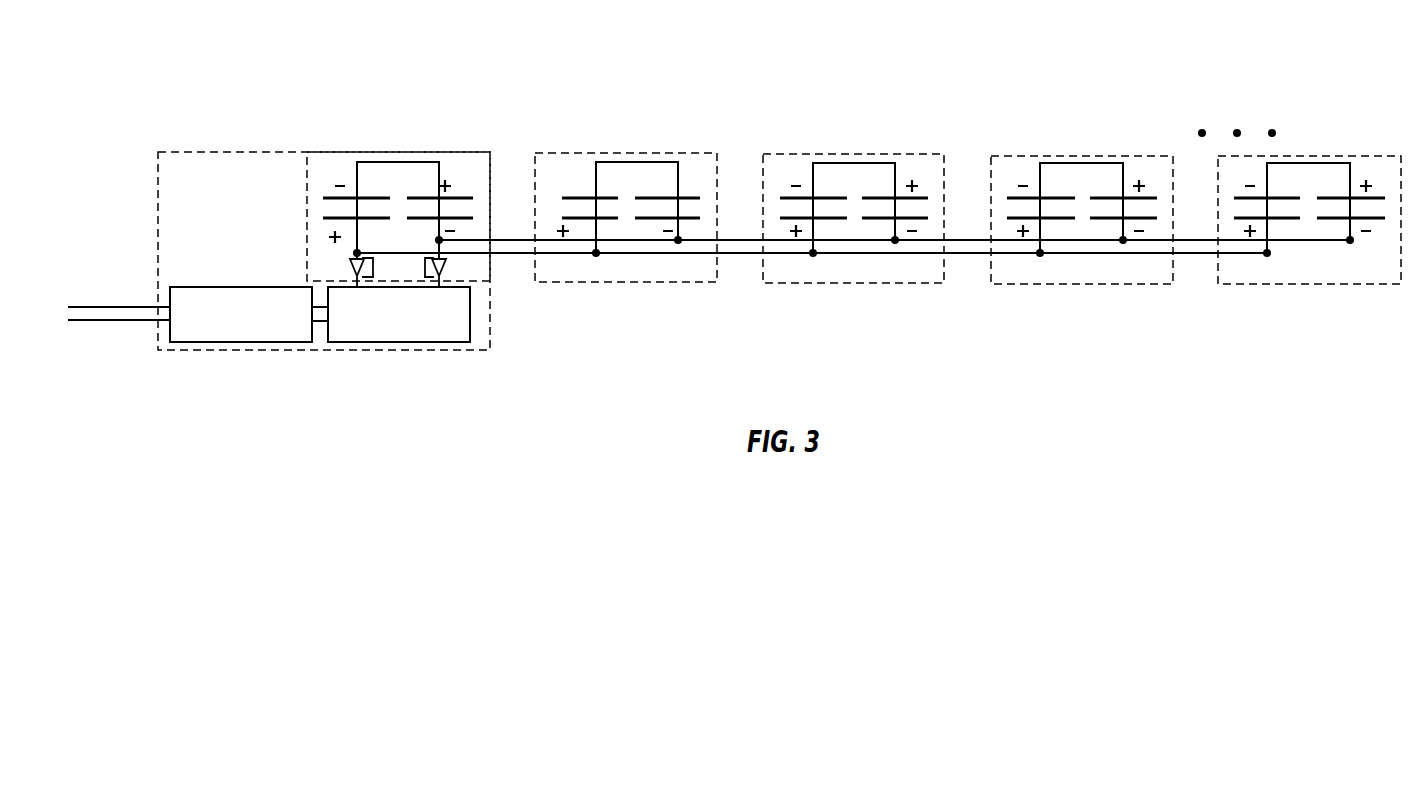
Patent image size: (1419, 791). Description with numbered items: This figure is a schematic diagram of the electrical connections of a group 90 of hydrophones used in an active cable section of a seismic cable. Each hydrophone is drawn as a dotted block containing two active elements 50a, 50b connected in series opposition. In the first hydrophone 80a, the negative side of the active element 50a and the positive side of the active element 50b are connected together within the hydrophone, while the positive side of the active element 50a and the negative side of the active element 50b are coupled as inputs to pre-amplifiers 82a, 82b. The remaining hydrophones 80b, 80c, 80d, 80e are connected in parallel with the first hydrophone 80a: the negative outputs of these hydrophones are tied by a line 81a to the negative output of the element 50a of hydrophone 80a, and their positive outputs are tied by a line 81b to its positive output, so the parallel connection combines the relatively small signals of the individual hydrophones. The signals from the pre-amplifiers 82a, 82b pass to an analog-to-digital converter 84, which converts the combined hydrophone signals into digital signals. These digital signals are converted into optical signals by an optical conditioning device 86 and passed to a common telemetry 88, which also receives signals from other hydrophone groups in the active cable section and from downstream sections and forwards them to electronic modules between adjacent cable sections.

The group 90 is at (778, 77).
The hydrophone 80a is at (398, 153).
The hydrophone 80b is at (638, 153).
The hydrophone 80c is at (855, 154).
The hydrophone 80d is at (1083, 156).
The hydrophone 80e is at (1312, 156).
The active element 50a is at (342, 175).
The active element 50b is at (468, 192).
The line 81a is at (732, 240).
The line 81b is at (738, 253).
The pre-amplifier 82a is at (353, 258).
The pre-amplifier 82b is at (443, 263).
The analog-to-digital converter 84 is at (398, 343).
The optical conditioning device 86 is at (242, 343).
The telemetry 88 is at (148, 320).